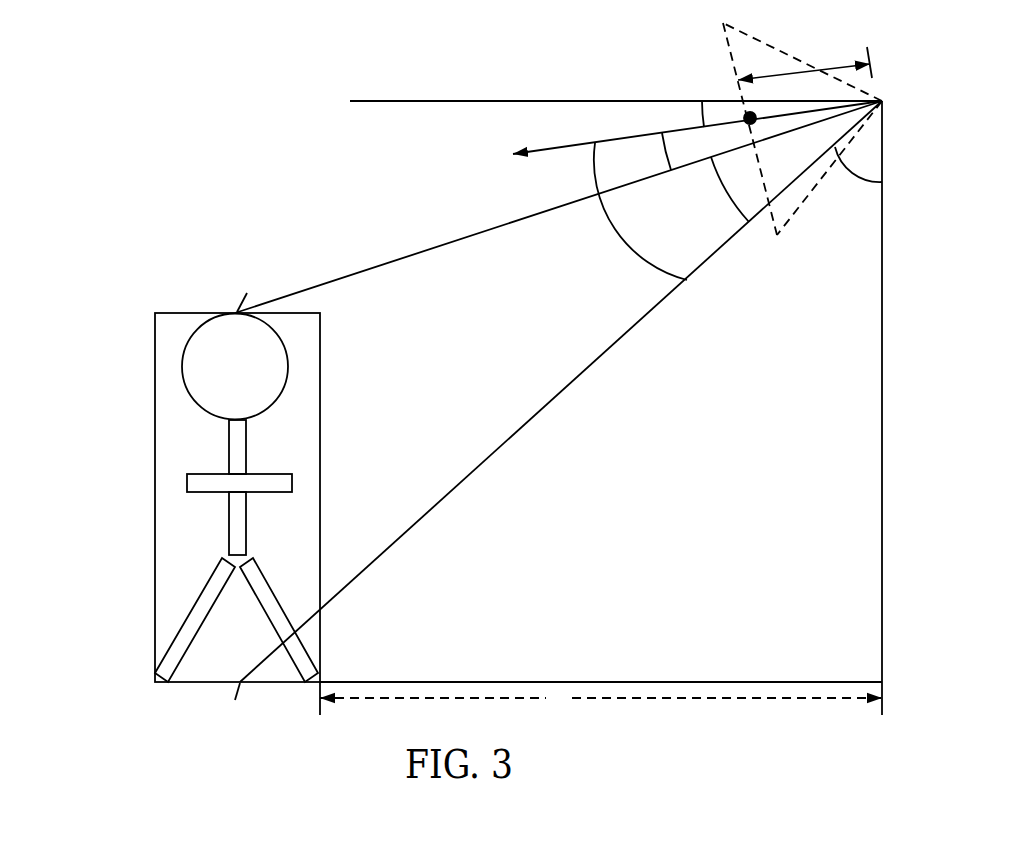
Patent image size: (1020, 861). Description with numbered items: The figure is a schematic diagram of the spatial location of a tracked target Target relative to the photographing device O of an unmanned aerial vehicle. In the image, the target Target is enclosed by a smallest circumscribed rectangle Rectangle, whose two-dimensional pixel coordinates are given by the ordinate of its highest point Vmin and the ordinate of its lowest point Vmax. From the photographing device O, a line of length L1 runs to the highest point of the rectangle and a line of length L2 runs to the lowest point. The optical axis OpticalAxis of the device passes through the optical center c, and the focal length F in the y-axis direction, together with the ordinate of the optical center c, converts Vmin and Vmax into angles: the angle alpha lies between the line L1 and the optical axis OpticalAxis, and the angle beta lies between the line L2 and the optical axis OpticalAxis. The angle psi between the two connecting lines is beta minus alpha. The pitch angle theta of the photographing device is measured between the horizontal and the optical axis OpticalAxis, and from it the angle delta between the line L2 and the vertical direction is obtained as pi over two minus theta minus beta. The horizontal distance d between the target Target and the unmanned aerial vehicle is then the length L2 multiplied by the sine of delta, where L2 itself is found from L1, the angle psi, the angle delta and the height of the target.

The photographing device O is at (624, 397).
The optical axis OpticalAxis is at (641, 133).
The length of line connecting highest point and photographing device L1 is at (558, 207).
The length of line connecting lowest point and photographing device L2 is at (561, 391).
The focal length F is at (805, 71).
The optical center c is at (742, 112).
The pitch angle theta is at (692, 115).
The angle alpha is at (653, 151).
The angle between lines to highest and lowest points psi is at (726, 190).
The angle beta is at (640, 211).
The angle delta is at (858, 174).
The smallest circumscribed rectangle Rectangle is at (155, 447).
The target Target is at (193, 507).
The distance d is at (601, 701).
The ordinate of highest point Vmin is at (247, 292).
The ordinate of lowest point Vmax is at (234, 706).